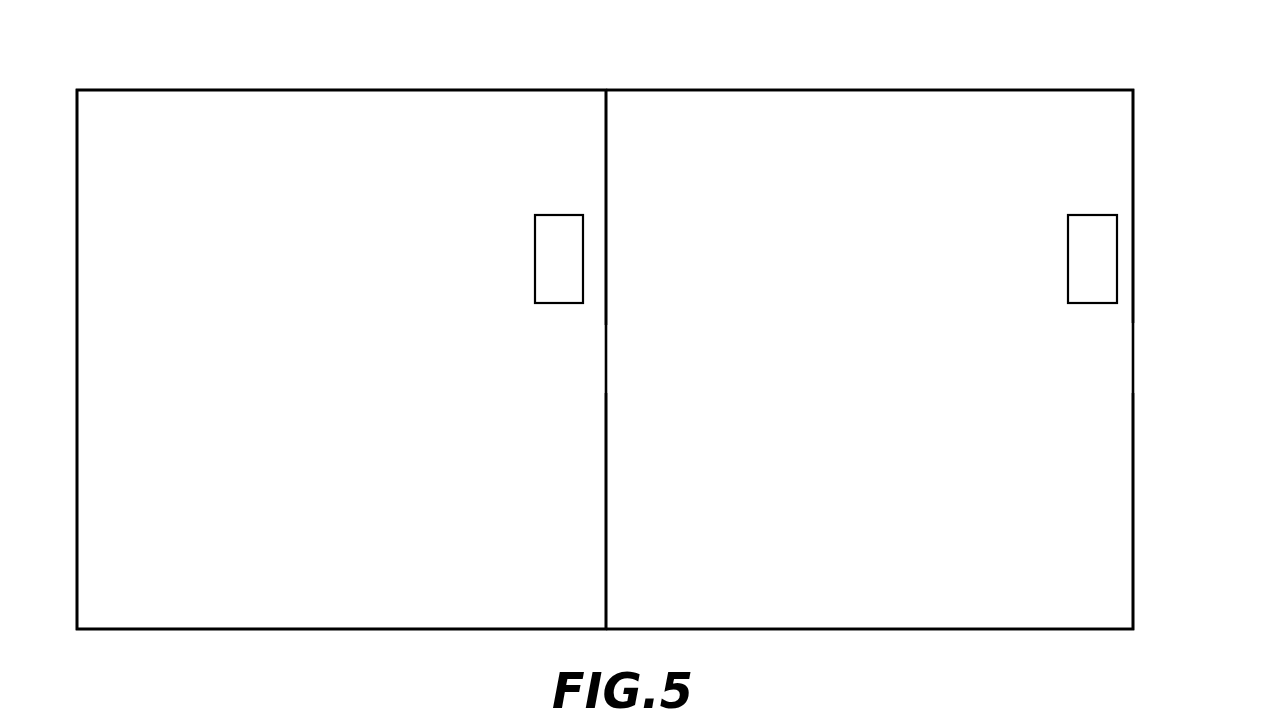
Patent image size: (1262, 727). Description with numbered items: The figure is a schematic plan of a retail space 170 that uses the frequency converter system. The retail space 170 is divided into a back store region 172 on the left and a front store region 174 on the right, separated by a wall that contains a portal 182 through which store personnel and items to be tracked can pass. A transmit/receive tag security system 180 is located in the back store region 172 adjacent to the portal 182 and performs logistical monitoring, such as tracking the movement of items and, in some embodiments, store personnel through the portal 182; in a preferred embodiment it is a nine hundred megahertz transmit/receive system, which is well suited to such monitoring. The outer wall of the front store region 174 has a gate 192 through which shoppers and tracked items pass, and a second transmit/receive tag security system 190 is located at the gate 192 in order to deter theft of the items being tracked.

The retail space 170 is at (1039, 66).
The back store region 172 is at (351, 99).
The front store region 174 is at (861, 99).
The transmit/receive tag security system 180 is at (549, 215).
The portal 182 is at (608, 361).
The transmit/receive tag security system 190 is at (1105, 215).
The gate 192 is at (1130, 361).